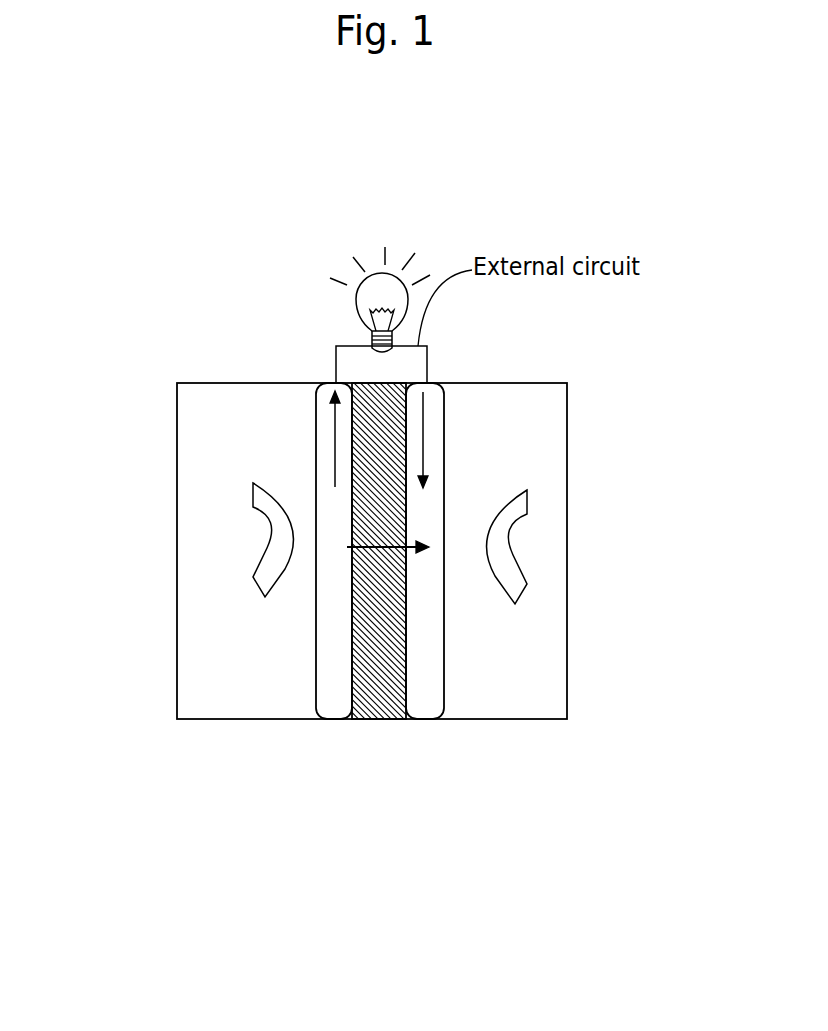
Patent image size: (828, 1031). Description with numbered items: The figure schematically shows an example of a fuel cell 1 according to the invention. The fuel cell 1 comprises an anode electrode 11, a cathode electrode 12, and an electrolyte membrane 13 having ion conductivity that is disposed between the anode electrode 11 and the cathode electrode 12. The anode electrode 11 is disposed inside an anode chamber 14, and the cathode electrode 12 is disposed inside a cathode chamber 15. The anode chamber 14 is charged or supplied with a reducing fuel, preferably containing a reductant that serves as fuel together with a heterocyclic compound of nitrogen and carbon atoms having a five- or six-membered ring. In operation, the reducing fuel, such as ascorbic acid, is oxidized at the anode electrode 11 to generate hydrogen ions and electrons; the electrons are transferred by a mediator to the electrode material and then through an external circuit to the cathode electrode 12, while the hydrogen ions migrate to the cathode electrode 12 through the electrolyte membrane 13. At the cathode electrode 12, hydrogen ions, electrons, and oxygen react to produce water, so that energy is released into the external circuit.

The fuel cell 1 is at (503, 789).
The anode electrode 11 is at (328, 384).
The cathode electrode 12 is at (434, 384).
The electrolyte membrane 13 is at (390, 721).
The anode chamber 14 is at (177, 482).
The cathode chamber 15 is at (567, 455).